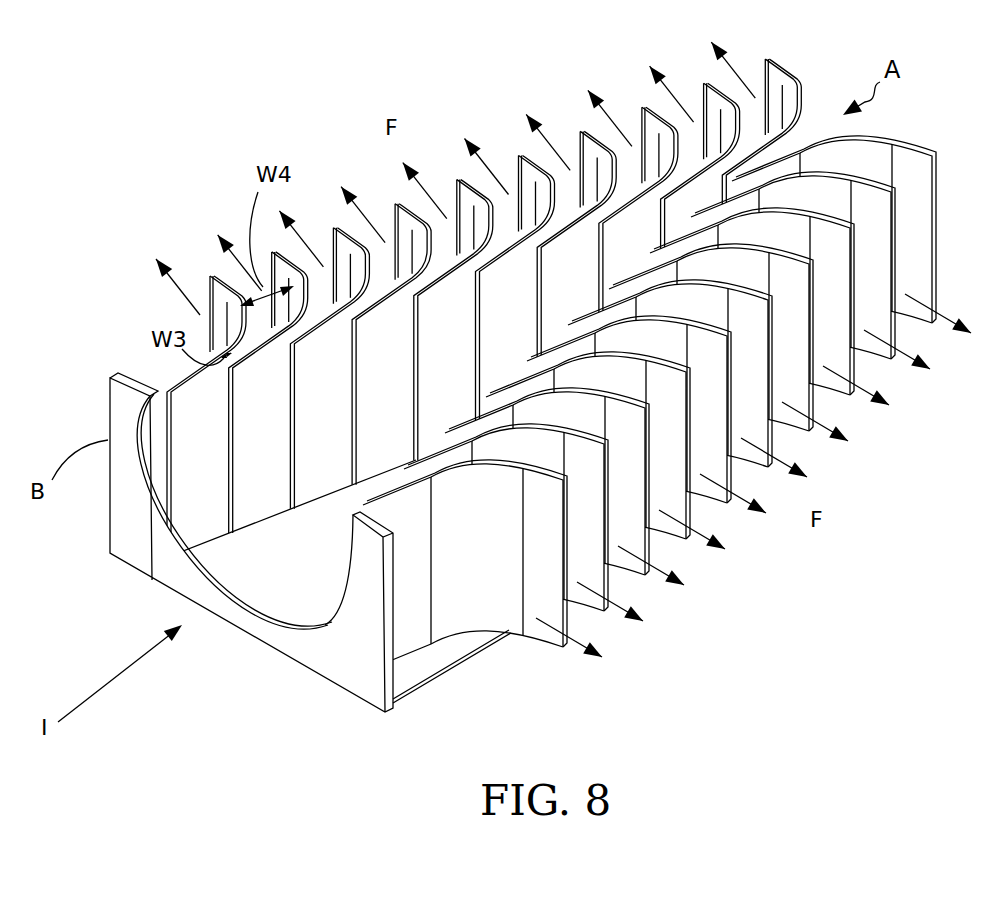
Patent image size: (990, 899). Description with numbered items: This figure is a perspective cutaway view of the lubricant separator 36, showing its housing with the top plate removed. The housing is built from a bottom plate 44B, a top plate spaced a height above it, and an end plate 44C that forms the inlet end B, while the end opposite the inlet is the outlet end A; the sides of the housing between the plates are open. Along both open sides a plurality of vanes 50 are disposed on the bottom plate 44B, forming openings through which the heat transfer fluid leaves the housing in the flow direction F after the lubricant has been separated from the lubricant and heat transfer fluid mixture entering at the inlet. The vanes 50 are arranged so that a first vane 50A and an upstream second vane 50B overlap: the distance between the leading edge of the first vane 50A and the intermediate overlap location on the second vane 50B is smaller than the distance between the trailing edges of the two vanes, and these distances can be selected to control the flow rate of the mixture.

The lubricant separator 36 is at (513, 378).
The vanes 50 is at (560, 373).
The first vane 50A is at (254, 456).
The second vane 50B is at (192, 458).
The bottom plate 44B is at (437, 680).
The end plate 44C is at (224, 556).